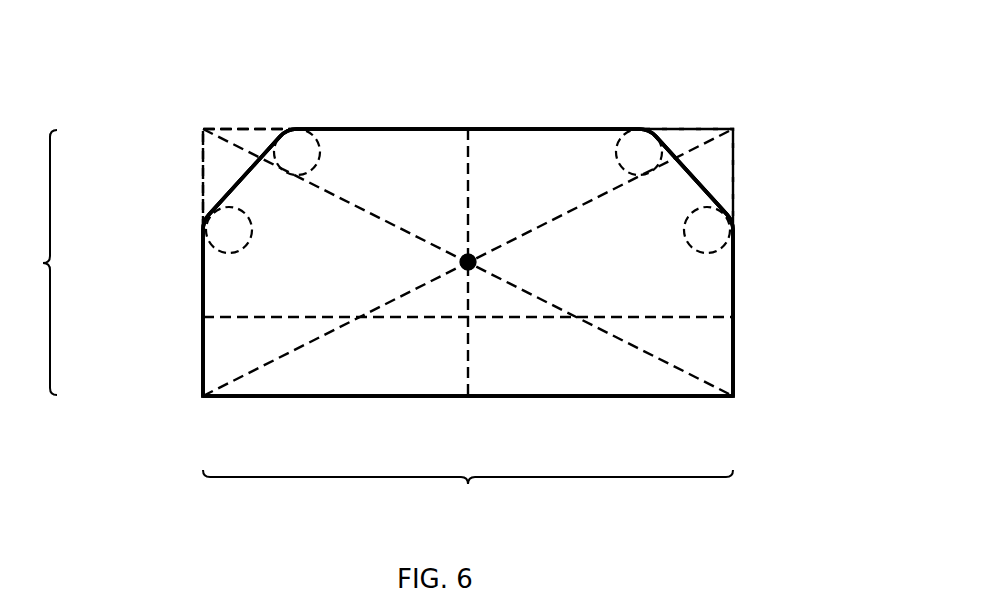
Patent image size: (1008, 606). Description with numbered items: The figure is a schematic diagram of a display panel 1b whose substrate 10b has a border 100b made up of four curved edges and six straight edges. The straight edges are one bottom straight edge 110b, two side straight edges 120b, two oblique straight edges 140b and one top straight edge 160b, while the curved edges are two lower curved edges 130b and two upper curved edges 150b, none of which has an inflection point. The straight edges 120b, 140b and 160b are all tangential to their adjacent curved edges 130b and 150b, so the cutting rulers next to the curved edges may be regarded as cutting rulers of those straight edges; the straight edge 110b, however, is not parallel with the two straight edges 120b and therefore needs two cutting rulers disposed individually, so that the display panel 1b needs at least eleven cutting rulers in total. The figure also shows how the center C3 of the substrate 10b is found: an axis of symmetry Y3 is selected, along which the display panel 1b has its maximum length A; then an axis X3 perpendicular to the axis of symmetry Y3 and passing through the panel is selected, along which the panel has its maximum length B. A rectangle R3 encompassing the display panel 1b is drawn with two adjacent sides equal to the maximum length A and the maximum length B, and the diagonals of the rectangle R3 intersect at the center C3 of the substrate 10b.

The display panel 1b is at (220, 113).
The substrate 10b is at (708, 278).
The border 100b is at (392, 129).
The straight edge 110b is at (674, 397).
The straight edges 120b is at (203, 351).
The curved edges 130b is at (203, 222).
The straight edges 140b is at (246, 170).
The curved edges 150b is at (288, 130).
The straight edge 160b is at (560, 129).
The center C3 is at (460, 262).
The axis X3 is at (700, 304).
The axis of symmetry Y3 is at (472, 173).
The rectangle R3 is at (734, 152).
The maximum length A is at (33, 262).
The maximum length B is at (468, 498).